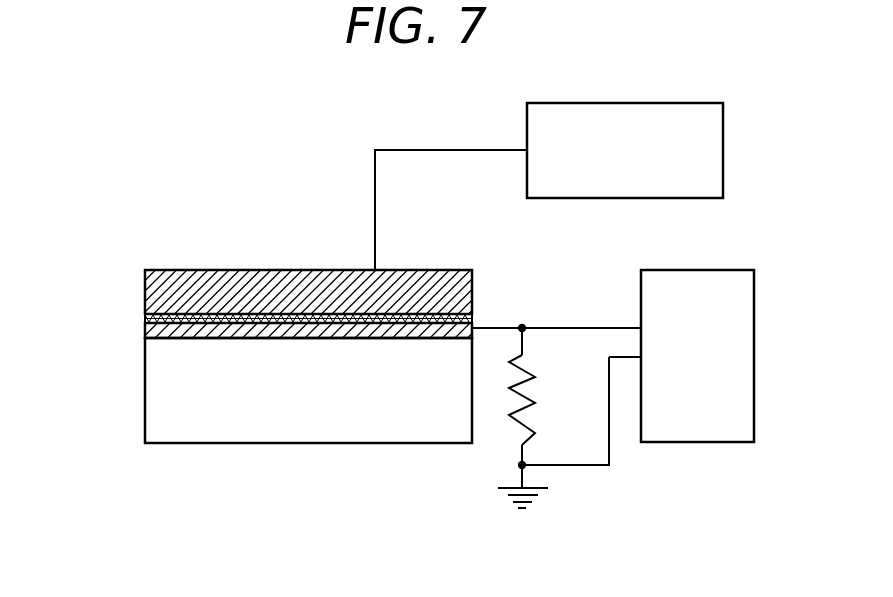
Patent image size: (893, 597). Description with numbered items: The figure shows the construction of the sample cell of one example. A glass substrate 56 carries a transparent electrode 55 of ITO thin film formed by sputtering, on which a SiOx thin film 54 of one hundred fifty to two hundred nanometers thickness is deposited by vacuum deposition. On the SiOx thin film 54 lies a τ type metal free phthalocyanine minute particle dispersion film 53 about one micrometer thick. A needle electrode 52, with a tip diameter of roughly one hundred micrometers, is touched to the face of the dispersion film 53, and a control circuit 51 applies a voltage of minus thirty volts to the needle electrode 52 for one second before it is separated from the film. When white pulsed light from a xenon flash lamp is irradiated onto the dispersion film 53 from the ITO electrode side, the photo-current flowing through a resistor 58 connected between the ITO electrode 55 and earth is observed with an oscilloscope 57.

The control circuit 51 is at (657, 102).
The needle electrode 52 is at (375, 220).
The τ type metal free phthalocyanine minute particle dispersion film 53 is at (150, 293).
The SiOx thin film 54 is at (145, 319).
The transparent electrode 55 is at (145, 333).
The glass substrate 56 is at (150, 408).
The oscilloscope 57 is at (705, 443).
The resistor 58 is at (508, 432).